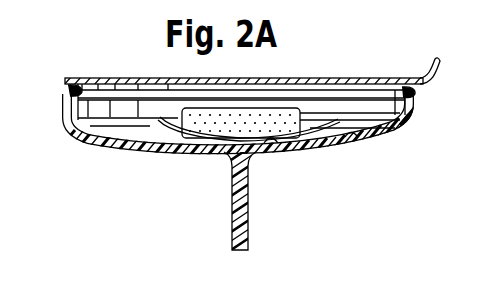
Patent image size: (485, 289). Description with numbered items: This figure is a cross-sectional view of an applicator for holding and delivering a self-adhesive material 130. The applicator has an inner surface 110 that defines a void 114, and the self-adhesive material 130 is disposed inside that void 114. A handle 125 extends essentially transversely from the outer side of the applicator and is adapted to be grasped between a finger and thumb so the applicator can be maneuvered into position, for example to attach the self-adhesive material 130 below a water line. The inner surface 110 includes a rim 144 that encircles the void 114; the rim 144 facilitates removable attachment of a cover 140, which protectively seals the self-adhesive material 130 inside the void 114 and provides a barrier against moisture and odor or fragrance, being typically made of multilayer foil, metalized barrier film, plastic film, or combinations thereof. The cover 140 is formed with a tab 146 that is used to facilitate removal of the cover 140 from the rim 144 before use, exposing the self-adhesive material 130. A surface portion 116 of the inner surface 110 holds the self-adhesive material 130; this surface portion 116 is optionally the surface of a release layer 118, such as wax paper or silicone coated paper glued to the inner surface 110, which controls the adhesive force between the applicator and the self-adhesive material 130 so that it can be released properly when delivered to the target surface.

The inner surface 110 is at (372, 142).
The void 114 is at (122, 110).
The surface portion 116 is at (268, 141).
The release layer 118 is at (163, 82).
The handle 125 is at (240, 195).
The self-adhesive material 130 is at (282, 110).
The cover 140 is at (272, 79).
The rim 144 is at (68, 92).
The tab 146 is at (430, 84).